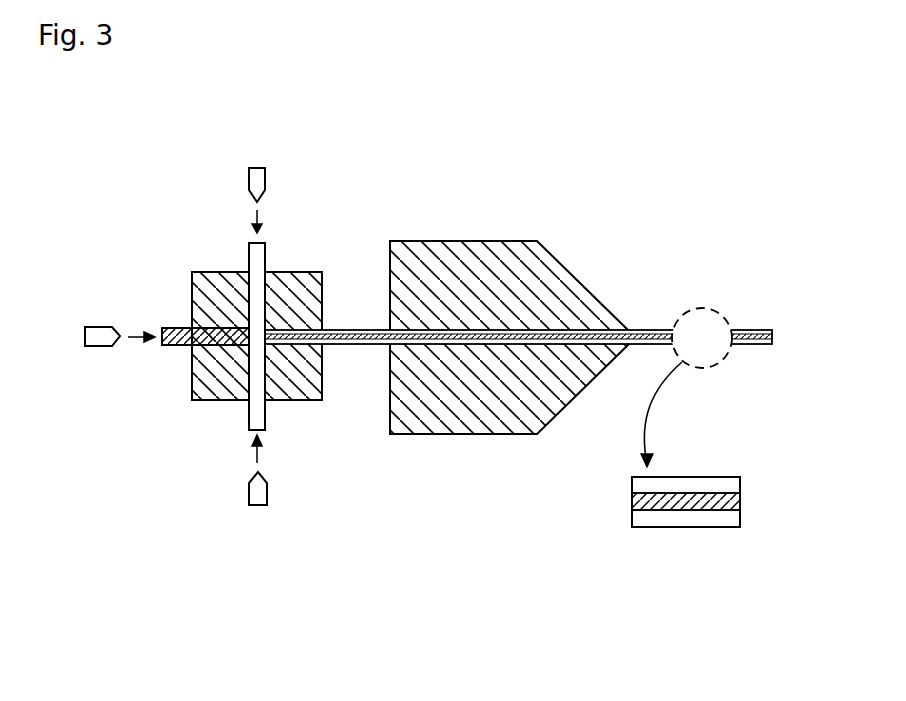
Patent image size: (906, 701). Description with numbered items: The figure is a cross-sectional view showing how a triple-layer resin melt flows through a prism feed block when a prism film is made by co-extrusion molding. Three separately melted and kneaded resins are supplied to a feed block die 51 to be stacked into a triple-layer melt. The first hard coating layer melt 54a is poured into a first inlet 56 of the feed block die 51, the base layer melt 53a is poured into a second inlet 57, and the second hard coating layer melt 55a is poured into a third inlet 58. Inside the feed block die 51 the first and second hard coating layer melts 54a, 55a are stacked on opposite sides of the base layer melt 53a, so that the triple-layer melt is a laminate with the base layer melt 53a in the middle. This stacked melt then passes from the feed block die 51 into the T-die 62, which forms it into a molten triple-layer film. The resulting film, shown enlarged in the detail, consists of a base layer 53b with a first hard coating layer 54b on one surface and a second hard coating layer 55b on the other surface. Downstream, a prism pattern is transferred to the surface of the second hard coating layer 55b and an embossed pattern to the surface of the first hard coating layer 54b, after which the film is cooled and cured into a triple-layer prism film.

The feed block die 51 is at (208, 292).
The base layer melt 53a is at (97, 338).
The base layer 53b is at (727, 502).
The first hard coating layer melt 54a is at (255, 182).
The first hard coating layer 54b is at (700, 487).
The second hard coating layer melt 55a is at (253, 493).
The second hard coating layer 55b is at (717, 520).
The first inlet 56 is at (268, 255).
The second inlet 57 is at (182, 340).
The third inlet 58 is at (262, 418).
The T-die 62 is at (453, 268).